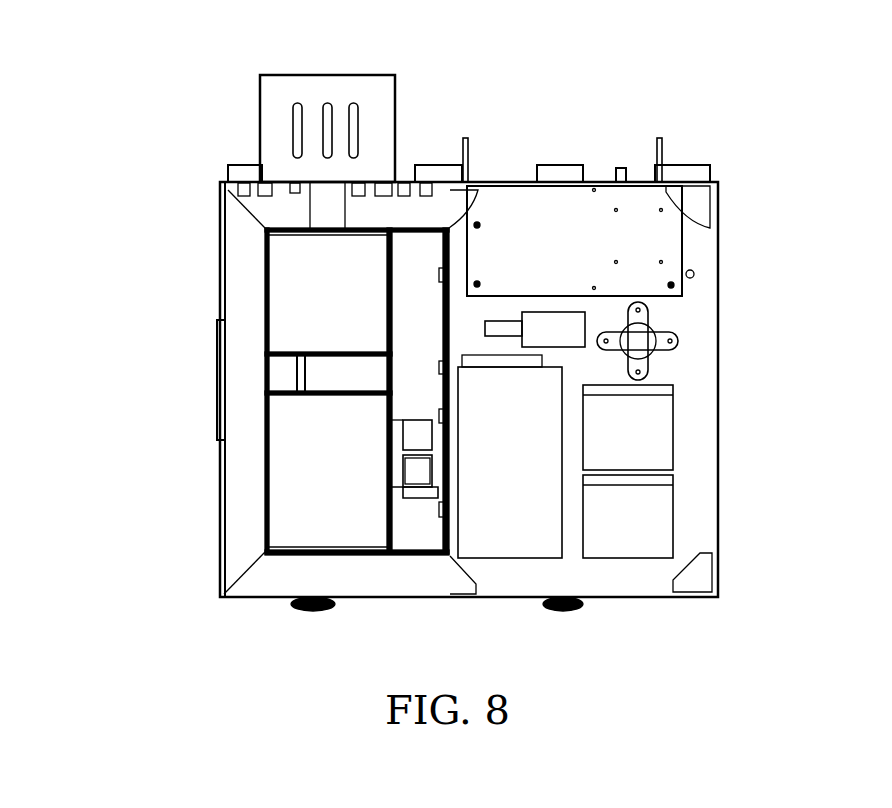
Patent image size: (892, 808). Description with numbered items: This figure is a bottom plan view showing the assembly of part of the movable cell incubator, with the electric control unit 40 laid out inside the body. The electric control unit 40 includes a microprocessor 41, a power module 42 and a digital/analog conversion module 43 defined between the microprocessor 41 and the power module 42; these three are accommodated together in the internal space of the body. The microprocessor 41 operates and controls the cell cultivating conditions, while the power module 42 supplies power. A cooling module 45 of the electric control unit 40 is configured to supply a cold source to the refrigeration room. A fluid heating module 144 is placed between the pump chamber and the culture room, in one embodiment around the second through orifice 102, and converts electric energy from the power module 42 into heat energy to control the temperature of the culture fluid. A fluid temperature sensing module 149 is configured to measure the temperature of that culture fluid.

The electric control unit 40 is at (632, 565).
The microprocessor 41 is at (645, 432).
The power module 42 is at (515, 540).
The digital/analog conversion module 43 is at (648, 525).
The cooling module 45 is at (397, 117).
The second through orifice 102 is at (413, 495).
The fluid heating module 144 is at (418, 420).
The fluid temperature sensing module 149 is at (403, 440).